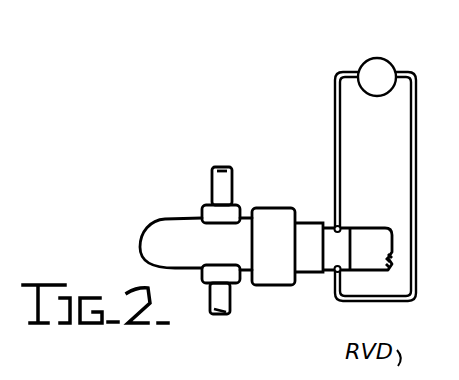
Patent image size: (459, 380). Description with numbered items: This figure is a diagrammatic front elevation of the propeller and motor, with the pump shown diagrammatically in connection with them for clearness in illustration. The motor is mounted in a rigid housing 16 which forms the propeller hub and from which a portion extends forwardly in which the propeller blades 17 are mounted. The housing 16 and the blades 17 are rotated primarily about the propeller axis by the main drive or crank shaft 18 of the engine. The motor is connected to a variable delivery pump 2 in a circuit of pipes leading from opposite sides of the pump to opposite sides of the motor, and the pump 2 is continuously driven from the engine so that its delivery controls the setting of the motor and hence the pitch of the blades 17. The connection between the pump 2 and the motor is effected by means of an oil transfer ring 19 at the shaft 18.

The variable delivery pump 2 is at (384, 58).
The rigid housing 16 is at (280, 207).
The propeller blades 17 is at (225, 166).
The main drive or crank shaft 18 is at (360, 228).
The oil transfer ring 19 is at (335, 272).